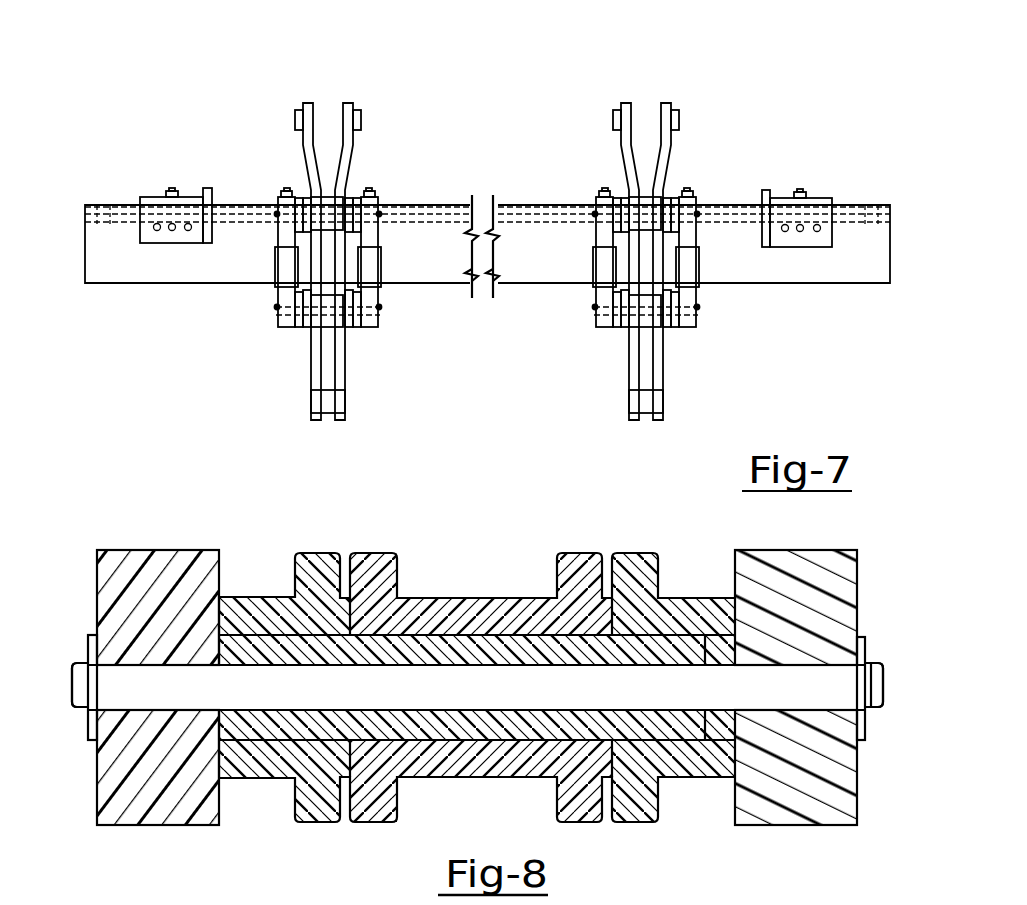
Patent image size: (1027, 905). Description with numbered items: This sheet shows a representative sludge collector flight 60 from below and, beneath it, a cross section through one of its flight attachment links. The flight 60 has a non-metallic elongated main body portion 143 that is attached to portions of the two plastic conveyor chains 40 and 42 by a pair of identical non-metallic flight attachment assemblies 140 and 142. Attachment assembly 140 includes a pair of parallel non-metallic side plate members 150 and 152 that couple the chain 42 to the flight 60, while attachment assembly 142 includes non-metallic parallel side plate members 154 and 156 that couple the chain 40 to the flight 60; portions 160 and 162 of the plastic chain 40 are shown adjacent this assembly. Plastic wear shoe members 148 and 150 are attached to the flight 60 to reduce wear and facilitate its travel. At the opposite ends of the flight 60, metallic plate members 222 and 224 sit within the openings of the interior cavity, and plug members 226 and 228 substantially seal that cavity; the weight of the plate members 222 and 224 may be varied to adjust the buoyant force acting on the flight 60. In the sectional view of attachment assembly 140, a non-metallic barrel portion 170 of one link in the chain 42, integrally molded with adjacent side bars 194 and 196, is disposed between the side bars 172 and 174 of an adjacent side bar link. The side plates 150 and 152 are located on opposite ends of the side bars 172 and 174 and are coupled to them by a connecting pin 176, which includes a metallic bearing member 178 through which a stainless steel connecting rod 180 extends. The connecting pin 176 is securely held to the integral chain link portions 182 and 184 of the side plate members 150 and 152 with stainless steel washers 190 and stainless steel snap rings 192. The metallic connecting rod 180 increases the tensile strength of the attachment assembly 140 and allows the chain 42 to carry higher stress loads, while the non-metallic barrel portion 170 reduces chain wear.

In FIG. 7, the conveyor chain 40 is at (662, 93).
In FIG. 7, the conveyor chain 42 is at (357, 95).
In FIG. 7, the sludge collector flight 60 is at (460, 98).
In FIG. 7, the flight attachment assembly 140 is at (282, 180).
In FIG. 8, the flight attachment assembly 140 is at (398, 535).
In FIG. 7, the flight attachment assembly 142 is at (690, 185).
In FIG. 7, the main body portion 143 is at (533, 180).
In FIG. 7, the wear shoe member 148 is at (188, 200).
In FIG. 7, the side plate member 150 is at (813, 200).
In FIG. 8, the side plate member 150 is at (195, 587).
In FIG. 7, the side plate member 152 is at (370, 327).
In FIG. 8, the side plate member 152 is at (778, 580).
In FIG. 7, the side plate member 154 is at (607, 323).
In FIG. 7, the side plate member 156 is at (688, 323).
In FIG. 7, the chain portion 160 is at (672, 145).
In FIG. 7, the chain portion 162 is at (667, 355).
In FIG. 7, the barrel portion 170 is at (323, 200).
In FIG. 8, the barrel portion 170 is at (488, 618).
In FIG. 7, the side bar 172 is at (312, 255).
In FIG. 8, the side bar 172 is at (252, 612).
In FIG. 7, the side bar 174 is at (347, 257).
In FIG. 8, the side bar 174 is at (687, 610).
In FIG. 8, the connecting pin 176 is at (262, 750).
In FIG. 8, the bearing member 178 is at (397, 728).
In FIG. 8, the connecting rod 180 is at (467, 690).
In FIG. 8, the integral chain link portion 182 is at (173, 533).
In FIG. 8, the integral chain link portion 184 is at (868, 578).
In FIG. 8, the washer 190 is at (120, 632).
In FIG. 8, the snap ring 192 is at (72, 640).
In FIG. 7, the side bar 194 is at (303, 147).
In FIG. 7, the side bar 196 is at (352, 153).
In FIG. 7, the plate member 222 is at (108, 213).
In FIG. 7, the plate member 224 is at (865, 217).
In FIG. 7, the plug member 226 is at (95, 213).
In FIG. 7, the plug member 228 is at (882, 217).